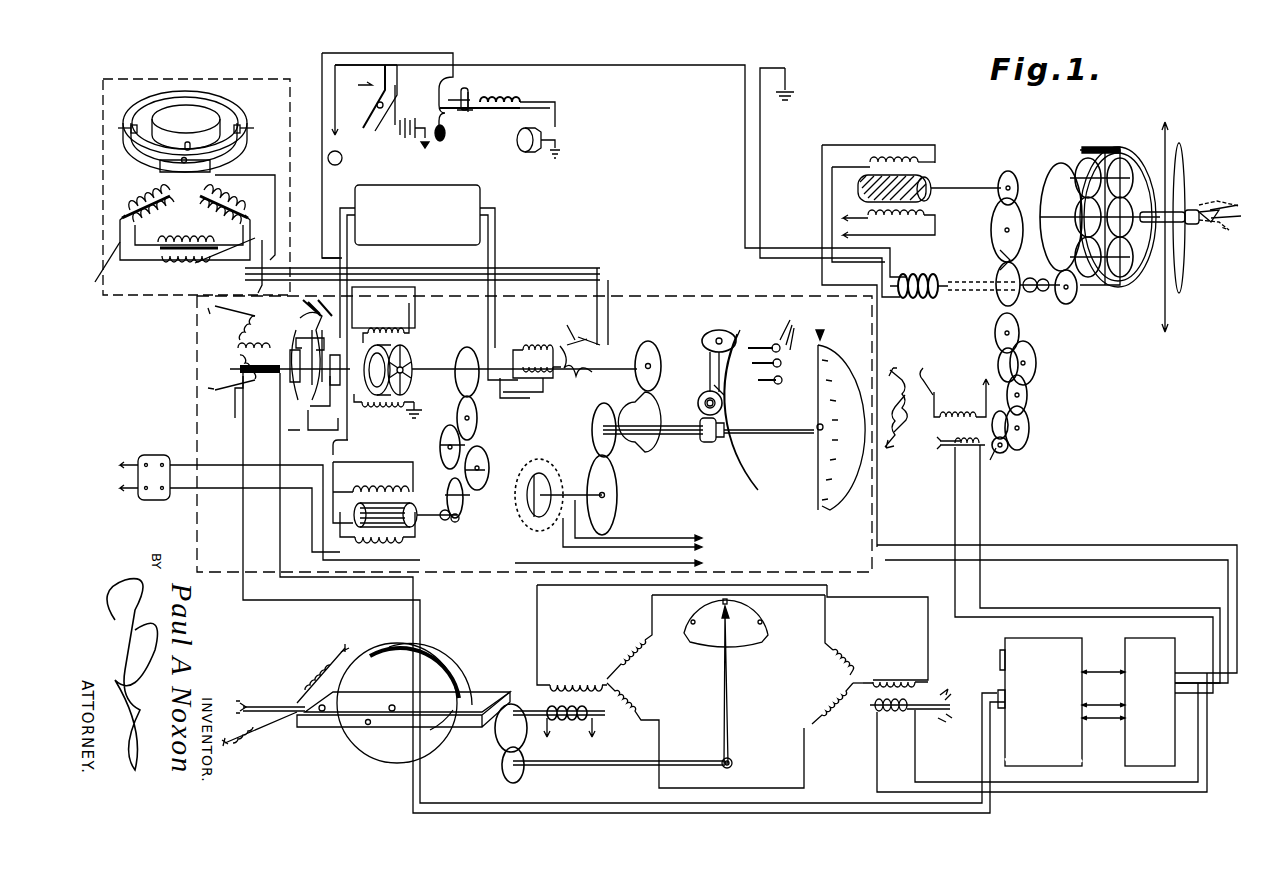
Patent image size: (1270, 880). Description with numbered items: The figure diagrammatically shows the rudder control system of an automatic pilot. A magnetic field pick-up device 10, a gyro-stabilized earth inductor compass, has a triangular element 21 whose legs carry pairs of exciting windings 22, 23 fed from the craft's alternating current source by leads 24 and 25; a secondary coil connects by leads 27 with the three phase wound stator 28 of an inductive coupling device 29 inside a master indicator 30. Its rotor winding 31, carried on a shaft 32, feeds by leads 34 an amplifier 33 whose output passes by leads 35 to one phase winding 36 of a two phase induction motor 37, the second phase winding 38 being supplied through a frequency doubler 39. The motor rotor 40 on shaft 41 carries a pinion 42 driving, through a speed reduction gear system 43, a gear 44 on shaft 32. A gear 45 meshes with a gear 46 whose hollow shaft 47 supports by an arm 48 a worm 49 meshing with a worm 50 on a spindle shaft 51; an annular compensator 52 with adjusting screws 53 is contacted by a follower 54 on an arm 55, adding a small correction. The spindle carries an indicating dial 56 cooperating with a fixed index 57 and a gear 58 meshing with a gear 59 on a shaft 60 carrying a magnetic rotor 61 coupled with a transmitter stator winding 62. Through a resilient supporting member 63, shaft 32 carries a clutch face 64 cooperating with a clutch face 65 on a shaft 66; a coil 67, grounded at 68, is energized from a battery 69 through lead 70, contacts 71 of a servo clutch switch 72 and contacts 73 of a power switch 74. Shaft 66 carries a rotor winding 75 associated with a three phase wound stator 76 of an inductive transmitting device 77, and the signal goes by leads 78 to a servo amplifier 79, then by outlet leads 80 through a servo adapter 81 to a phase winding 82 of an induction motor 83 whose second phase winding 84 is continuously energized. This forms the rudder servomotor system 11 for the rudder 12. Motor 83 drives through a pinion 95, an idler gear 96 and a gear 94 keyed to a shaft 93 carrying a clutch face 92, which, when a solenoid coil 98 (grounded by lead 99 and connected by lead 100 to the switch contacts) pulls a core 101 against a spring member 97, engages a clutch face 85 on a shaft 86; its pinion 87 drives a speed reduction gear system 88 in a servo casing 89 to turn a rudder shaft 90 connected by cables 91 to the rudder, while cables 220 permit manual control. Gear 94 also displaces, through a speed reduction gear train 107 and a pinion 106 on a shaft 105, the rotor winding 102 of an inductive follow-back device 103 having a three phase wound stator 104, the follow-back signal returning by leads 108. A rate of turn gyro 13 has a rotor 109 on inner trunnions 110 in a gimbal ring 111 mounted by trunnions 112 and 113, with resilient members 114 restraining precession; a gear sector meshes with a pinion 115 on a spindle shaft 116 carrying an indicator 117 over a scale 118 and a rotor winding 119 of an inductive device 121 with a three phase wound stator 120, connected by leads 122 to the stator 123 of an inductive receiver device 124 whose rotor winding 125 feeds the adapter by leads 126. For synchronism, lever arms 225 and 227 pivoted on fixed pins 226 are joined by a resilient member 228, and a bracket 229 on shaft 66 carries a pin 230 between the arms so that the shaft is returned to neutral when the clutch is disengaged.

The magnetic field pick-up device 10 is at (135, 78).
The rudder servomotor system 11 is at (913, 343).
The rudder surface 12 is at (1220, 200).
The rate of turn responsive gyro 13 is at (470, 648).
The triangular element 21 is at (185, 238).
The exciting winding 22 is at (150, 210).
The exciting winding 23 is at (165, 195).
The lead 24 is at (178, 266).
The lead 25 is at (246, 249).
The leads 27 is at (411, 260).
The three phase wound stator 28 is at (222, 100).
The inductive coupling device 29 is at (555, 350).
The master indicator 30 is at (665, 298).
The rotor winding 31 is at (521, 392).
The shaft 32 is at (600, 350).
The vacuum tube amplifier 33 is at (455, 190).
The leads 34 is at (497, 248).
The leads 35 is at (312, 424).
The phase winding 36 is at (376, 540).
The two phase induction motor 37 is at (372, 514).
The second phase winding 38 is at (372, 488).
The frequency doubler 39 is at (150, 455).
The rotor 40 is at (420, 525).
The shaft 41 is at (440, 512).
The pinion 42 is at (447, 523).
The speed reduction gear system 43 is at (468, 457).
The gear 44 is at (530, 371).
The gear 45 is at (650, 342).
The gear 46 is at (636, 412).
The hollow shaft 47 is at (672, 440).
The arm 48 is at (700, 400).
The worm 49 is at (689, 390).
The worm 50 is at (713, 433).
The spindle shaft 51 is at (750, 428).
The annular compensator 52 is at (741, 413).
The adjusting screws 53 is at (771, 347).
The follower 54 is at (719, 330).
The arm 55 is at (729, 384).
The indicating dial 56 is at (818, 490).
The fixed index 57 is at (822, 332).
The gear 58 is at (582, 430).
The gear 59 is at (612, 505).
The shaft 60 is at (560, 480).
The magnetic rotor 61 is at (540, 470).
The stator winding 62 is at (608, 533).
The resilient supporting member 63 is at (408, 352).
The clutch face 64 is at (384, 345).
The clutch face 65 is at (385, 323).
The shaft 66 is at (282, 398).
The coil 67 is at (384, 406).
The ground 68 is at (418, 408).
The battery 69 is at (405, 125).
The lead 70 is at (328, 152).
The contacts 71 is at (452, 82).
The servo clutch switch 72 is at (447, 133).
The contacts 73 is at (366, 79).
The power switch 74 is at (375, 110).
The rotor winding 75 is at (280, 382).
The three phase wound stator 76 is at (246, 342).
The inductive transmitting device 77 is at (235, 348).
The leads 78 is at (243, 540).
The servo vacuum tube amplifier 79 is at (1028, 740).
The outlet leads 80 is at (1145, 560).
The servo adapter 81 is at (1138, 686).
The phase winding 82 is at (896, 155).
The induction motor 83 is at (929, 188).
The second phase winding 84 is at (903, 220).
The clutch face 85 is at (1040, 272).
The shaft 86 is at (1056, 300).
The pinion 87 is at (1072, 292).
The speed reduction gear system 88 is at (1050, 172).
The servo casing 89 is at (1112, 148).
The rudder shaft 90 is at (1208, 216).
The cables 91 is at (1185, 278).
The clutch face 92 is at (1025, 295).
The shaft 93 is at (992, 262).
The gear 94 is at (995, 296).
The pinion 95 is at (1000, 178).
The idler gear 96 is at (995, 222).
The spring member 97 is at (965, 280).
The solenoid coil 98 is at (912, 300).
The lead 99 is at (760, 222).
The lead 100 is at (700, 68).
The core 101 is at (925, 298).
The rotor winding 102 is at (945, 455).
The inductive follow-back device 103 is at (909, 408).
The three phase wound stator 104 is at (942, 400).
The shaft 105 is at (984, 470).
The pinion 106 is at (1004, 452).
The speed reduction gear train 107 is at (1029, 381).
The leads 108 is at (1070, 610).
The rotor 109 is at (380, 750).
The inner trunnions 110 is at (390, 706).
The gimbal ring 111 is at (350, 730).
The trunnion 112 is at (265, 703).
The trunnion 113 is at (530, 706).
The resilient members 114 is at (318, 662).
The pinion 115 is at (522, 778).
The spindle shaft 116 is at (648, 768).
The indicator 117 is at (730, 722).
The scale 118 is at (752, 636).
The rotor winding 119 is at (569, 736).
The three phase wound stator 120 is at (584, 681).
The inductive device 121 is at (695, 686).
The leads 122 is at (820, 626).
The three phase wound stator 123 is at (880, 668).
The inductive receiver device 124 is at (830, 687).
The rotor winding 125 is at (895, 712).
The leads 126 is at (1104, 794).
The cables 220 is at (1179, 230).
The lever arm 225 is at (320, 340).
The fixed pins 226 is at (307, 320).
The lever arm 227 is at (298, 320).
The resilient member 228 is at (354, 442).
The bracket 229 is at (294, 338).
The pin 230 is at (318, 380).